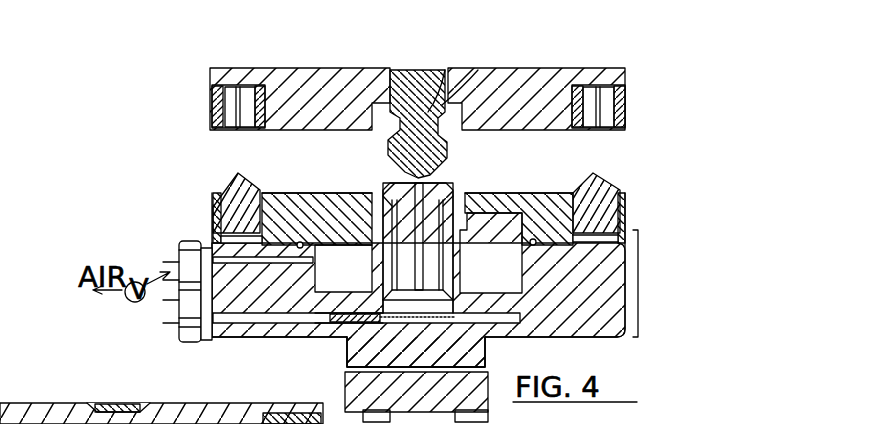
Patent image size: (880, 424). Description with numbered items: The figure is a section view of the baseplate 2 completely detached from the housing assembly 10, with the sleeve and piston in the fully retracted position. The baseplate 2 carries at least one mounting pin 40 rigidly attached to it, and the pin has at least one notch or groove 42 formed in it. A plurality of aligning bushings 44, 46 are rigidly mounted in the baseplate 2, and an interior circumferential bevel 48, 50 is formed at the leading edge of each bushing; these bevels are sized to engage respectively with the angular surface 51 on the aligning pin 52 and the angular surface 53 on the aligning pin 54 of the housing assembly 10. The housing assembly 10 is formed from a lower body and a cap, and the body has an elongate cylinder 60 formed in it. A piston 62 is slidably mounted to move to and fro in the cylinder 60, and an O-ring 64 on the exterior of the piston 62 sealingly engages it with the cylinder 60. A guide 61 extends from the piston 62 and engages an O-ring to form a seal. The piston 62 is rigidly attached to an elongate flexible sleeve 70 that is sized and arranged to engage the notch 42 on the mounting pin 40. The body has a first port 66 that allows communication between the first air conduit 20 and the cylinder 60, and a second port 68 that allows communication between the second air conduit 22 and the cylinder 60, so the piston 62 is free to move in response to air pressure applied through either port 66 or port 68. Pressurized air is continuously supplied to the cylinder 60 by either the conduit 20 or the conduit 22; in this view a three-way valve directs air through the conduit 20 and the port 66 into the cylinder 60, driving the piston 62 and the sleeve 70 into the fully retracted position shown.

The baseplate 2 is at (332, 100).
The housing assembly 10 is at (638, 263).
The first conduit 20 is at (170, 265).
The second conduit 22 is at (172, 310).
The mounting pin 40 is at (426, 70).
The notch 42 is at (475, 100).
The aligning bushing 44 is at (220, 86).
The aligning bushing 46 is at (622, 100).
The interior circumferential bevel 48 is at (242, 86).
The interior circumferential bevel 50 is at (580, 122).
The angular surface 51 is at (232, 200).
The aligning pin 52 is at (214, 206).
The angular surface 53 is at (585, 190).
The aligning pin 54 is at (601, 200).
The cylinder 60 is at (505, 337).
The guide 61 is at (338, 198).
The piston 62 is at (347, 327).
The O-ring 64 is at (307, 303).
The first port 66 is at (212, 250).
The second port 68 is at (235, 336).
The elongate flexible sleeve 70 is at (452, 193).